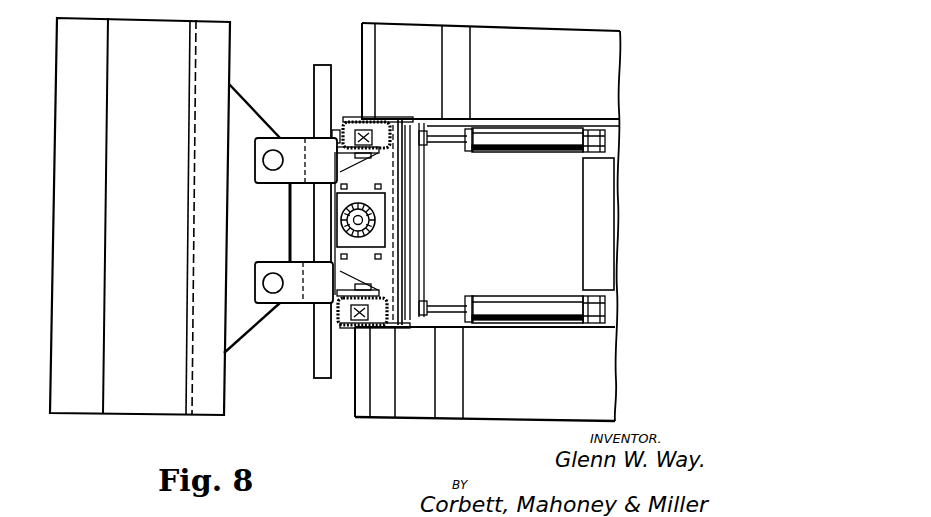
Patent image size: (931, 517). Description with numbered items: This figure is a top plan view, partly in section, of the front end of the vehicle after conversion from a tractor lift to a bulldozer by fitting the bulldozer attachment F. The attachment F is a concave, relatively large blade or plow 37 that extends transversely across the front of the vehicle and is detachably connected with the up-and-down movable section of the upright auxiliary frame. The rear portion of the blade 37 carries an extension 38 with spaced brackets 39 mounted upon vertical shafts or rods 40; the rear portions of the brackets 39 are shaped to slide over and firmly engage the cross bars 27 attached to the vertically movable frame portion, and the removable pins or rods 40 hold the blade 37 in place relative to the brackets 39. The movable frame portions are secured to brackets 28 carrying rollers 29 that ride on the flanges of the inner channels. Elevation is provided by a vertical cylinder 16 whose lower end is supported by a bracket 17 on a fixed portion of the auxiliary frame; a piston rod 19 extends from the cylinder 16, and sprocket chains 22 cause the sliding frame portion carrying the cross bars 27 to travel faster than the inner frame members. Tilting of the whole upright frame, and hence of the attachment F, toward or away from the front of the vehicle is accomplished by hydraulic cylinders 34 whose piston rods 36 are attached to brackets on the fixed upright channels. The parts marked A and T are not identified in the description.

The blade or plow 37 is at (150, 188).
The extension 38 is at (247, 120).
The brackets 39 is at (297, 148).
The vertical shafts or rods 40 is at (275, 166).
The cross bars 27 is at (318, 357).
The brackets 28 is at (352, 292).
The rollers 29 is at (359, 125).
The sprocket chains 22 is at (380, 178).
The bracket 17 is at (368, 240).
The vertical cylinder 16 is at (375, 203).
The piston rod 19 is at (362, 221).
The hydraulic cylinders 34 is at (515, 137).
The piston rods 36 is at (451, 134).
The apparatus A is at (623, 202).
The bulldozer attachment F is at (45, 235).
The table T is at (409, 427).